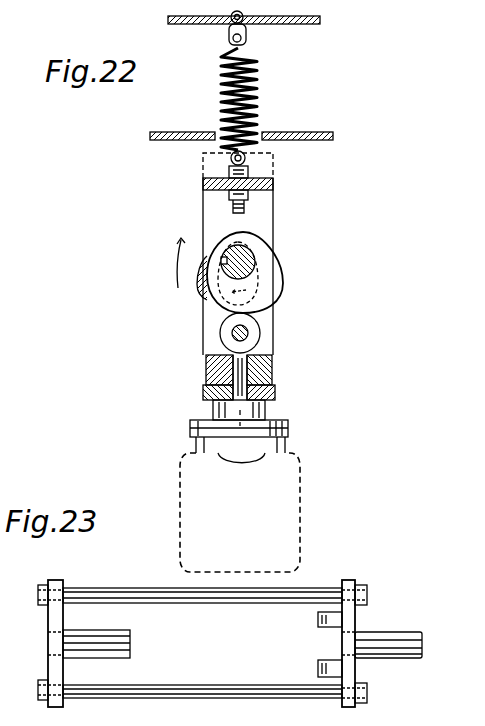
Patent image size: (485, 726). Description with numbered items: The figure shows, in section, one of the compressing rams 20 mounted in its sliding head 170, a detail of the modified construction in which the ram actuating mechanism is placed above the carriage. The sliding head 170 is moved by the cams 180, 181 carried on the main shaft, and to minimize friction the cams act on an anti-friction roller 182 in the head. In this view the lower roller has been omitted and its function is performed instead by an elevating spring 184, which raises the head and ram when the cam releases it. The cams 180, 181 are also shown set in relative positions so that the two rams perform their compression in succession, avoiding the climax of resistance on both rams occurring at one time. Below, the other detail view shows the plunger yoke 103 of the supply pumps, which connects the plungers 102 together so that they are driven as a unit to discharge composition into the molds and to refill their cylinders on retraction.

In FIG. 22, the elevating spring 184 is at (259, 86).
In FIG. 22, the sliding head 170 is at (263, 212).
In FIG. 22, the cam 180 is at (201, 282).
In FIG. 22, the cam 181 is at (212, 293).
In FIG. 22, the anti-friction roller 182 is at (255, 338).
In FIG. 22, the ram 20 is at (268, 411).
In FIG. 23, the yoke 103 is at (118, 588).
In FIG. 23, the plunger 102 is at (131, 643).